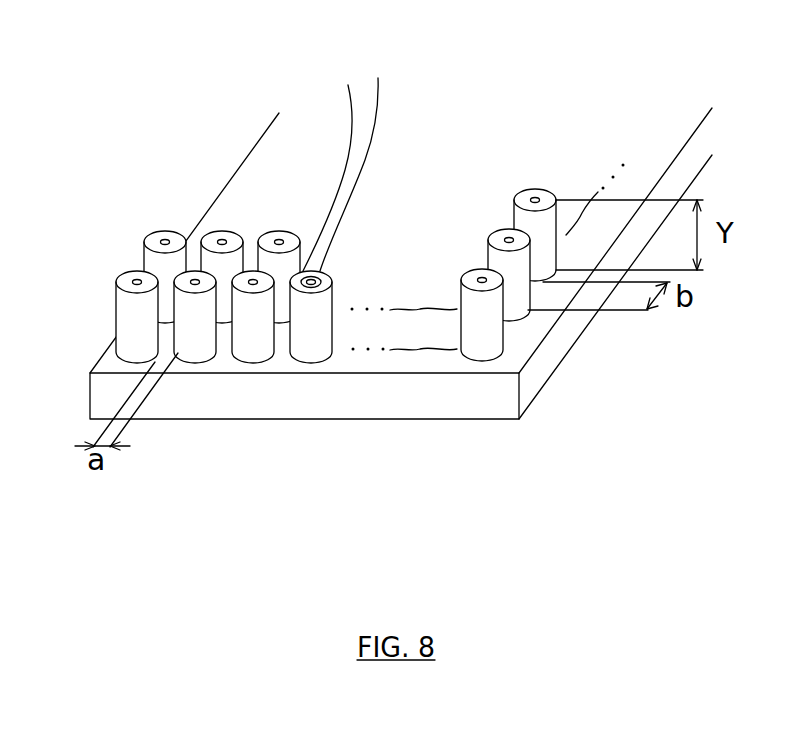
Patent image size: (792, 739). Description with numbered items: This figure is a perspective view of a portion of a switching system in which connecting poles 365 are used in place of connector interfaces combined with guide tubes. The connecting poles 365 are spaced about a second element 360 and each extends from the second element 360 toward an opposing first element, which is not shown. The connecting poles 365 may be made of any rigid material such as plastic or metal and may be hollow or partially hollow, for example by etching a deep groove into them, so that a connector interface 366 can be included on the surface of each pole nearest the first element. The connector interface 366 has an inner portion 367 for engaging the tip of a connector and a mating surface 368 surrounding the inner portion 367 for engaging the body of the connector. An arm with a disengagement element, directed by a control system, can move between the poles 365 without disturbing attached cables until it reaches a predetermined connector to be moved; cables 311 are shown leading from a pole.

The optical fibers 311 is at (347, 171).
The second element 360 is at (562, 376).
The connecting pole 365 is at (237, 324).
The connector interface 366 is at (340, 275).
The inner portion 367 is at (308, 283).
The mating surface 368 is at (305, 275).